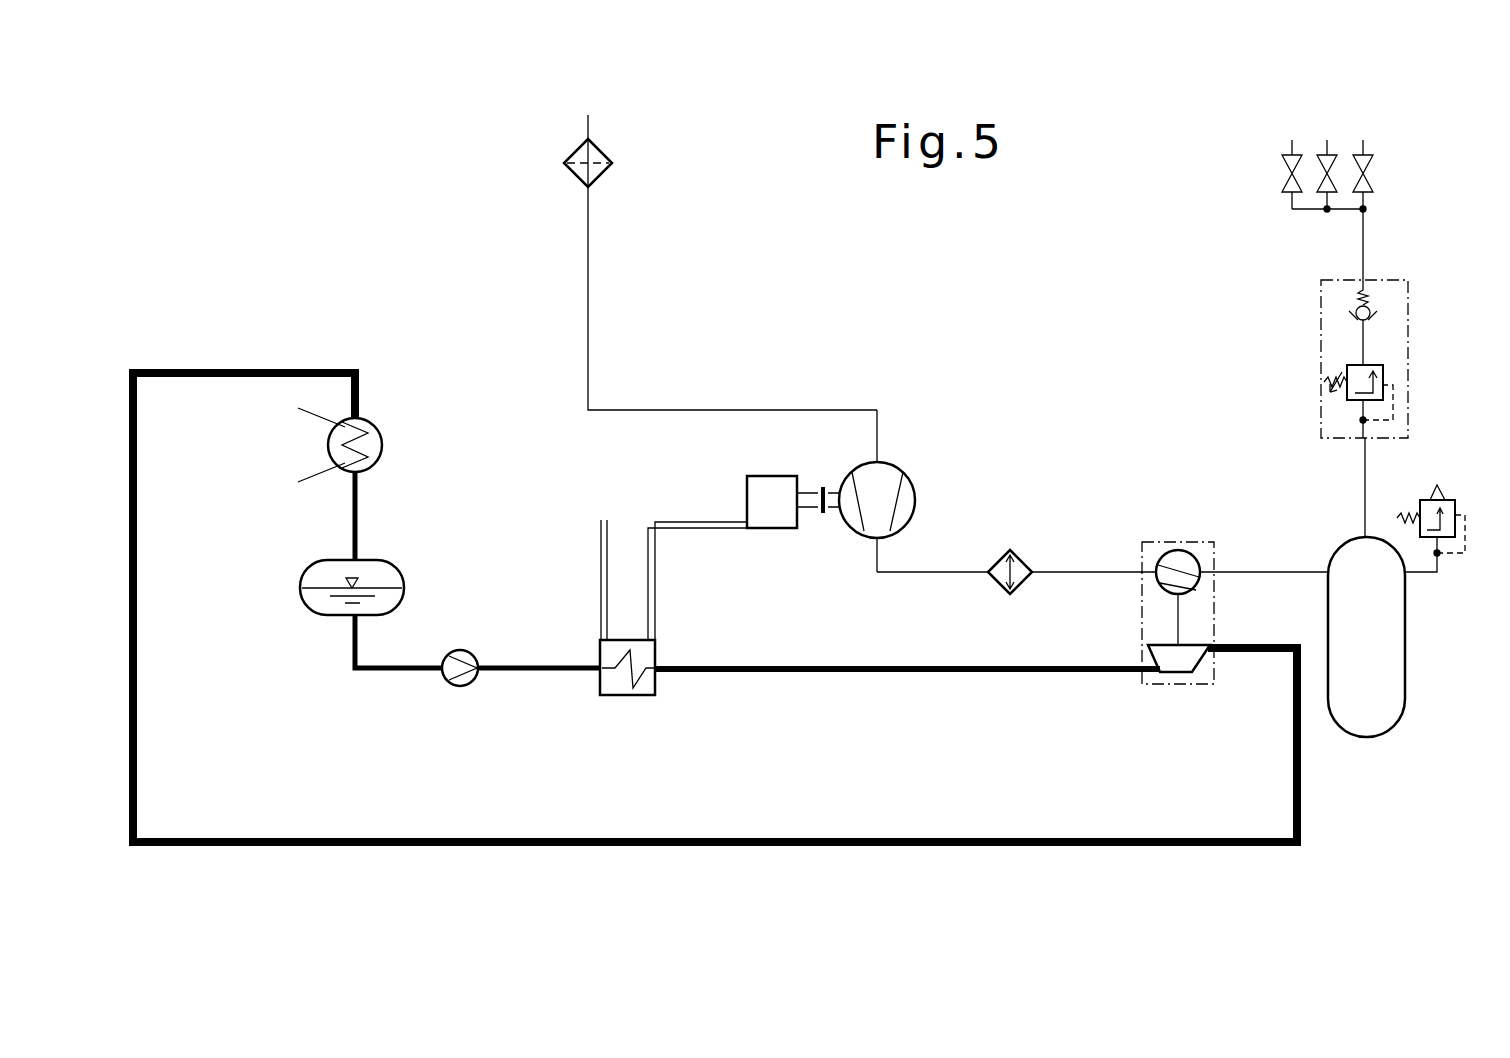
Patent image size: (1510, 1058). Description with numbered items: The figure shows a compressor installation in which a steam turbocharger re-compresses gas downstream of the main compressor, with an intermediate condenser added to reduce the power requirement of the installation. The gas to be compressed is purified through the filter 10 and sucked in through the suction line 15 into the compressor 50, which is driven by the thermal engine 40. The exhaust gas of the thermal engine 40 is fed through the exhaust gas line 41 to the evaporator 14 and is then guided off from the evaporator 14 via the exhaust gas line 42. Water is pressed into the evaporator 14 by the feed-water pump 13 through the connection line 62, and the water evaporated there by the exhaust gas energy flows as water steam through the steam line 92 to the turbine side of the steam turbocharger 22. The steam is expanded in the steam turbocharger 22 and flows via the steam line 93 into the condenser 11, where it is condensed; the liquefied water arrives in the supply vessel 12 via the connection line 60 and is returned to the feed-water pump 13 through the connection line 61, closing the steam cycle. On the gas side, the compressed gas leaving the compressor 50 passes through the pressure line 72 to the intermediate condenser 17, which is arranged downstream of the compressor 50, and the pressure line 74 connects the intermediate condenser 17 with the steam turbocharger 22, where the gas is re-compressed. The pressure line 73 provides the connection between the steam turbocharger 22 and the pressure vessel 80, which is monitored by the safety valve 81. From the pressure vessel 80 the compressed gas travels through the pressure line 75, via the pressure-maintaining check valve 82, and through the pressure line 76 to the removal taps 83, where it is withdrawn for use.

The filter 10 is at (598, 151).
The condenser 11 is at (330, 446).
The supply vessel 12 is at (306, 567).
The feed-water pump 13 is at (476, 678).
The evaporator 14 is at (650, 698).
The suction line 15 is at (588, 325).
The intermediate condenser 17 is at (1026, 566).
The steam turbocharger 22 is at (1206, 530).
The thermal engine 40 is at (791, 474).
The exhaust gas line 41 is at (662, 582).
The exhaust gas line 42 is at (600, 580).
The compressor 50 is at (906, 481).
The connection line 60 is at (352, 540).
The connection line 61 is at (416, 672).
The connection line 62 is at (513, 672).
The pressure line 72 is at (908, 573).
The pressure line 73 is at (1242, 572).
The pressure line 74 is at (1071, 556).
The pressure line 75 is at (1365, 505).
The pressure line 76 is at (1363, 268).
The pressure vessel 80 is at (1403, 652).
The safety valve 81 is at (1455, 500).
The pressure-maintaining check valve 82 is at (1410, 325).
The removal taps 83 is at (1400, 150).
The steam line 92 is at (936, 674).
The steam line 93 is at (770, 838).